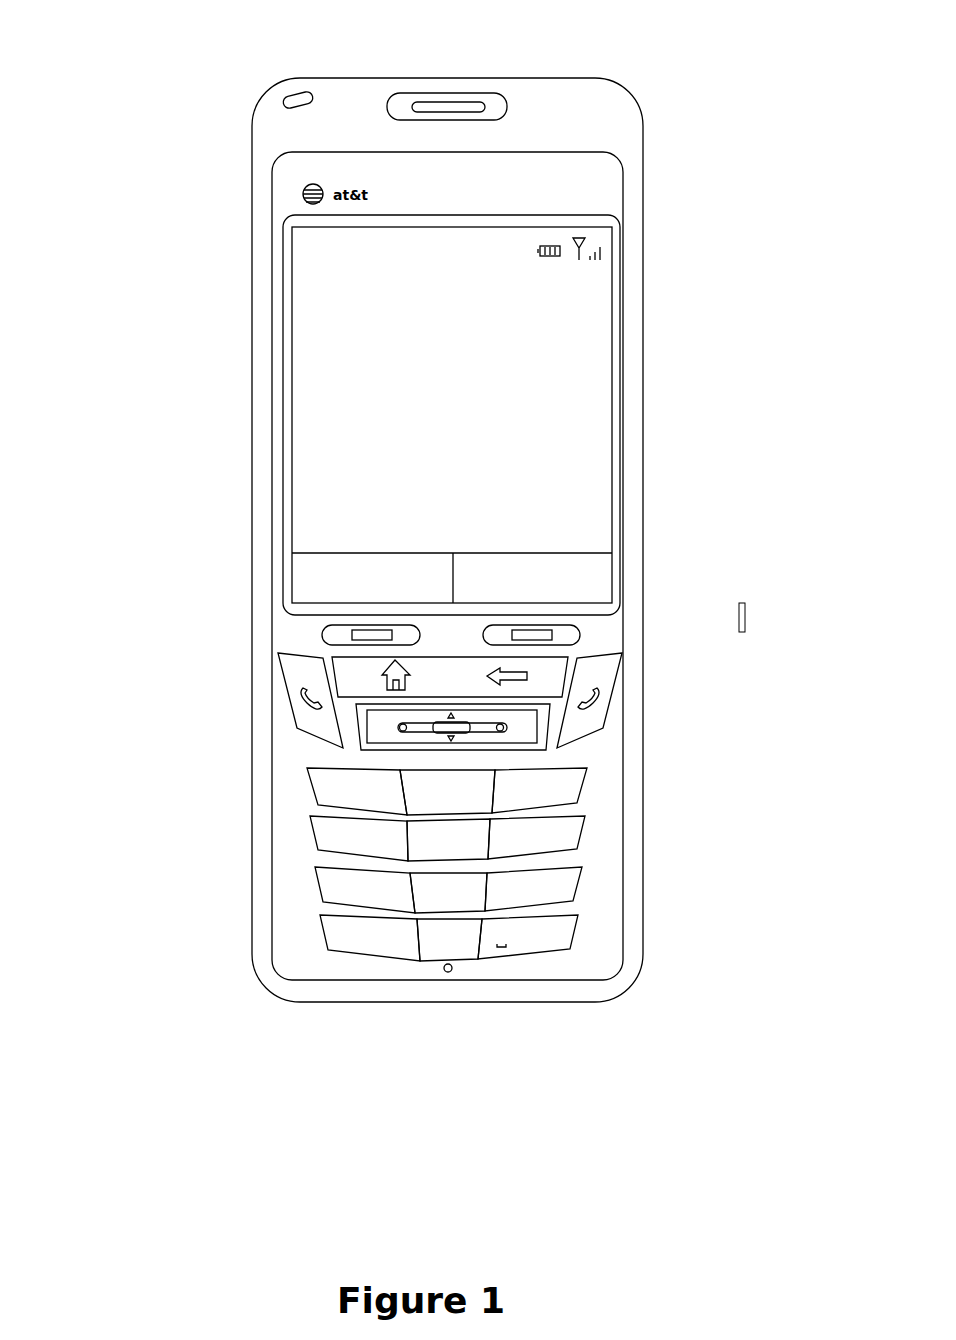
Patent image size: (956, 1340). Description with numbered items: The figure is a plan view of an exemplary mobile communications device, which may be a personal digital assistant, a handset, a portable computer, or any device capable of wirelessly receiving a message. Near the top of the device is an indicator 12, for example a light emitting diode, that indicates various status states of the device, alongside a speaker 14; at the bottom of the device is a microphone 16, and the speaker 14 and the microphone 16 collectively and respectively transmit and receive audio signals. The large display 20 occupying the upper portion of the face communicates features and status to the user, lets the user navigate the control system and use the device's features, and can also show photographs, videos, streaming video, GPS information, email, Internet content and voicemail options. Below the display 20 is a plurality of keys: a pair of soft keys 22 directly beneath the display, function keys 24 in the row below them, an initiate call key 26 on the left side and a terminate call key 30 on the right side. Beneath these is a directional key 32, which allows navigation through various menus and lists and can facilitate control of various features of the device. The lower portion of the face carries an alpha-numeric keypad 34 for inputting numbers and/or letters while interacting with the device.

The indicator 12 is at (298, 98).
The speaker 14 is at (496, 110).
The microphone 16 is at (445, 968).
The display 20 is at (487, 380).
The soft keys 22 is at (558, 637).
The function keys 24 is at (550, 677).
The initiate call key 26 is at (323, 685).
The terminate call key 30 is at (573, 722).
The directional key 32 is at (537, 742).
The alpha-numeric keypad 34 is at (665, 762).